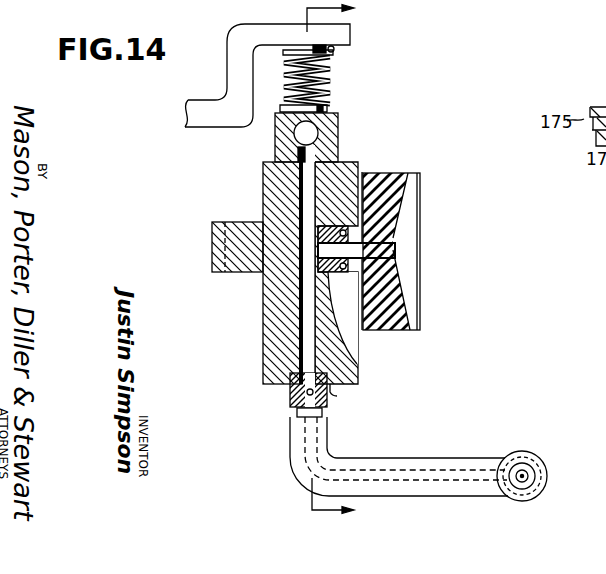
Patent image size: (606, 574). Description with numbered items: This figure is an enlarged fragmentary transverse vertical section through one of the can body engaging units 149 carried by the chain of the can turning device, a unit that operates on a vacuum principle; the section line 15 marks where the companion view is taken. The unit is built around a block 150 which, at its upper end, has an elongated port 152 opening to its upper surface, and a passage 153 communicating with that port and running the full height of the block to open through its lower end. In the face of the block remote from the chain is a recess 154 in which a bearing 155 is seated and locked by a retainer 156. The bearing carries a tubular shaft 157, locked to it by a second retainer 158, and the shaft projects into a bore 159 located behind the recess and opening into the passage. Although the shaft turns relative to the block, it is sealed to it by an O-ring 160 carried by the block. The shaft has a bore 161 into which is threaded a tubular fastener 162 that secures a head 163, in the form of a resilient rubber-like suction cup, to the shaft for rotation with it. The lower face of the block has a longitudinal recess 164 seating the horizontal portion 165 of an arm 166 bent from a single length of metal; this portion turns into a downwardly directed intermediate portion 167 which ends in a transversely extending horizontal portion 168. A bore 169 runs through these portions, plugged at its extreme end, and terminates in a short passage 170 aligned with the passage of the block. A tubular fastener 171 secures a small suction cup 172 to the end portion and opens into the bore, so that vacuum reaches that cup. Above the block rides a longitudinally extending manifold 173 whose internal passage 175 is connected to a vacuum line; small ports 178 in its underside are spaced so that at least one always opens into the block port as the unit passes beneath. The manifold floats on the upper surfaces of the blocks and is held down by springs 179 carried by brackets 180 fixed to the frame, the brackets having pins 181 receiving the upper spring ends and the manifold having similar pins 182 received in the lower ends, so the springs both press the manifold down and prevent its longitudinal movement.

The section line 15- 15 is at (346, 261).
The can body engaging unit 149 is at (367, 155).
The block 150 is at (347, 363).
The elongated port 152 is at (300, 172).
The passage 153 is at (299, 322).
The recess 154 is at (344, 228).
The bearing 155 is at (340, 226).
The retainer 156 is at (359, 166).
The tubular shaft 157 is at (308, 265).
The retainer 158 is at (266, 222).
The bore 159 is at (314, 273).
The O-ring 160 is at (359, 341).
The bore 161 is at (318, 258).
The tubular fastener 162 is at (393, 240).
The head 163 is at (414, 174).
The longitudinal recess 164 is at (335, 387).
The horizontal portion 165 is at (292, 394).
The arm 166 is at (370, 464).
The intermediate portion 167 is at (327, 432).
The horizontal portion 168 is at (480, 458).
The bore 169 is at (300, 445).
The short passage 170 is at (293, 382).
The tubular fastener 171 is at (527, 475).
The small suction cup 172 is at (530, 451).
The manifold 173 is at (398, 103).
The passage 175 is at (282, 128).
The small ports 178 is at (294, 137).
The springs 179 is at (332, 78).
The brackets 180 is at (236, 85).
The pins 181 is at (331, 53).
The pins 182 is at (405, 81).